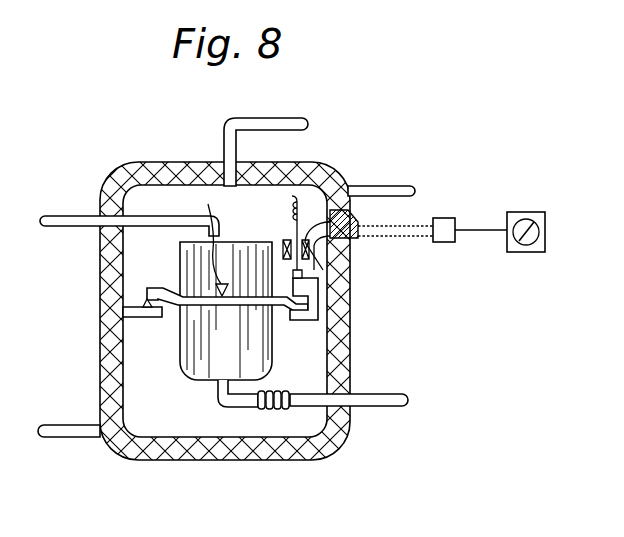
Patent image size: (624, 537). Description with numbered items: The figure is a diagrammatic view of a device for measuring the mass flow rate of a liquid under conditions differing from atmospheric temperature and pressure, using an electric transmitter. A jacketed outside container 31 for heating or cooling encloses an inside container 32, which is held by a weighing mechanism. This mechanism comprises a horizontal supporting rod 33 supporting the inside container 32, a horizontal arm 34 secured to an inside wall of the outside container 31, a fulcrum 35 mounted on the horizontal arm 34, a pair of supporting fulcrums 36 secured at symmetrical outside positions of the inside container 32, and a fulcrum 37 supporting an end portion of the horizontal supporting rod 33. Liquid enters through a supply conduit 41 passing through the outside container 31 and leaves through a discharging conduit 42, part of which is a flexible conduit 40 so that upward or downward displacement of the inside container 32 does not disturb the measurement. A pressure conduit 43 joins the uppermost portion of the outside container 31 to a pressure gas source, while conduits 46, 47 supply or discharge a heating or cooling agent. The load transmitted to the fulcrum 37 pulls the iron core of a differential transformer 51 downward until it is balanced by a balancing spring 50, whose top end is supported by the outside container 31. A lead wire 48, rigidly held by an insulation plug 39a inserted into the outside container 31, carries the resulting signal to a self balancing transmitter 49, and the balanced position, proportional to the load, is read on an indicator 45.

The outside container 31 is at (325, 172).
The inside container 32 is at (184, 355).
The horizontal supporting rod 33 is at (212, 376).
The horizontal arm 34 is at (136, 318).
The fulcrum 35 is at (150, 306).
The supporting fulcrums 36 is at (204, 242).
The fulcrum 37 is at (292, 322).
The insulation plug 39a is at (360, 220).
The flexible conduit 40 is at (262, 409).
The supply conduit 41 is at (65, 227).
The discharging conduit 42 is at (386, 407).
The pressure conduit 43 is at (287, 121).
The indicator 45 is at (525, 253).
The supply or discharge conduit 46 is at (65, 427).
The supply or discharge conduit 47 is at (396, 187).
The lead wire 48 is at (422, 238).
The self balancing transmitter 49 is at (452, 242).
The balancing spring 50 is at (290, 205).
The differential transformer 51 is at (312, 252).